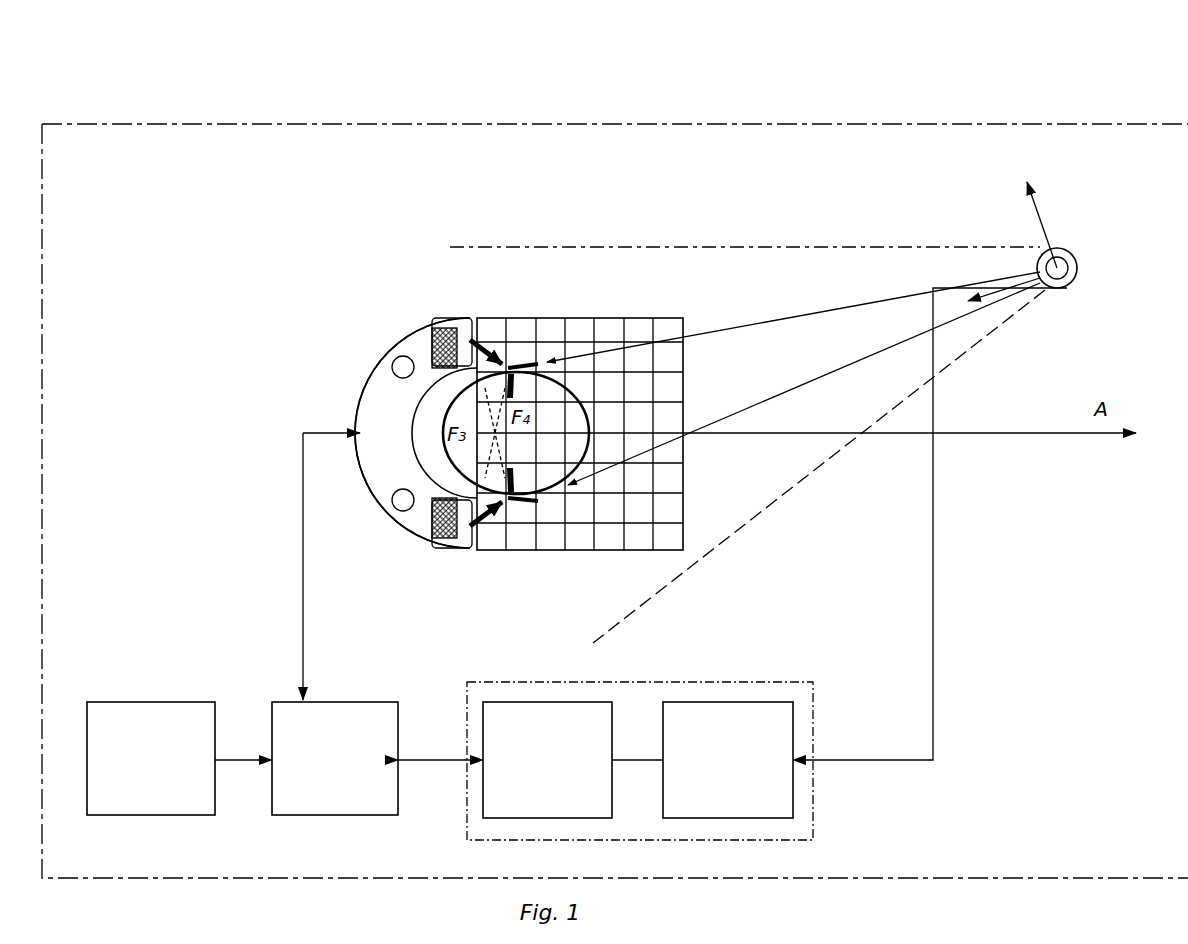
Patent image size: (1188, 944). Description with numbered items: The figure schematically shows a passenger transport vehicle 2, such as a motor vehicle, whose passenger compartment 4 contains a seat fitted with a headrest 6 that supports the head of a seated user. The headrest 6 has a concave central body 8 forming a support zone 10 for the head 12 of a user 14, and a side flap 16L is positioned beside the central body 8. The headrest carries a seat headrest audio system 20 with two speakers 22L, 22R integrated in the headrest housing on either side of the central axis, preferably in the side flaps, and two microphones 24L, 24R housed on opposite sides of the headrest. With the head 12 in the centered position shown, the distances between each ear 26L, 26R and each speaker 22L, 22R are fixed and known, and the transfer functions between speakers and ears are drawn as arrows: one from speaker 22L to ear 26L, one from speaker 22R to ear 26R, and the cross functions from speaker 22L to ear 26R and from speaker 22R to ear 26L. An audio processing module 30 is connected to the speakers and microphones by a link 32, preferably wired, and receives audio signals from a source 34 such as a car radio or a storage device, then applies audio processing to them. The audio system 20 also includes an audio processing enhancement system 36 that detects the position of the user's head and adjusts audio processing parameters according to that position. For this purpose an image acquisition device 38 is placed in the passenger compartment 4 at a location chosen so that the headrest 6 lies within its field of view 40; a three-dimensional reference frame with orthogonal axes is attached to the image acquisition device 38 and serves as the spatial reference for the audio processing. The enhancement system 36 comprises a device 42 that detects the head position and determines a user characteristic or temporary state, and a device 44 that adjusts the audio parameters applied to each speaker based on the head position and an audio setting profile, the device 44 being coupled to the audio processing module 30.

The passenger transport vehicle 2 is at (712, 124).
The passenger compartment 4 is at (853, 140).
The headrest 6 is at (322, 352).
The central body 8 is at (363, 397).
The support zone 10 is at (408, 446).
The head 12 is at (590, 420).
The user 14 is at (600, 362).
The side flap 16L is at (420, 327).
The seat headrest audio system 20 is at (292, 520).
The speaker 22L is at (433, 323).
The speaker 22R is at (430, 550).
The microphone 24L is at (392, 361).
The microphone 24R is at (404, 513).
The ear 26L is at (518, 355).
The ear 26R is at (522, 510).
The audio processing module 30 is at (377, 758).
The link 32 is at (303, 621).
The source 34 is at (179, 758).
The audio processing enhancement system 36 is at (825, 702).
The image acquisition device 38 is at (1073, 248).
The field of view 40 is at (790, 268).
The device for detecting the position of the user's head 42 is at (865, 553).
The device for adjusting audio parameters 44 is at (573, 760).